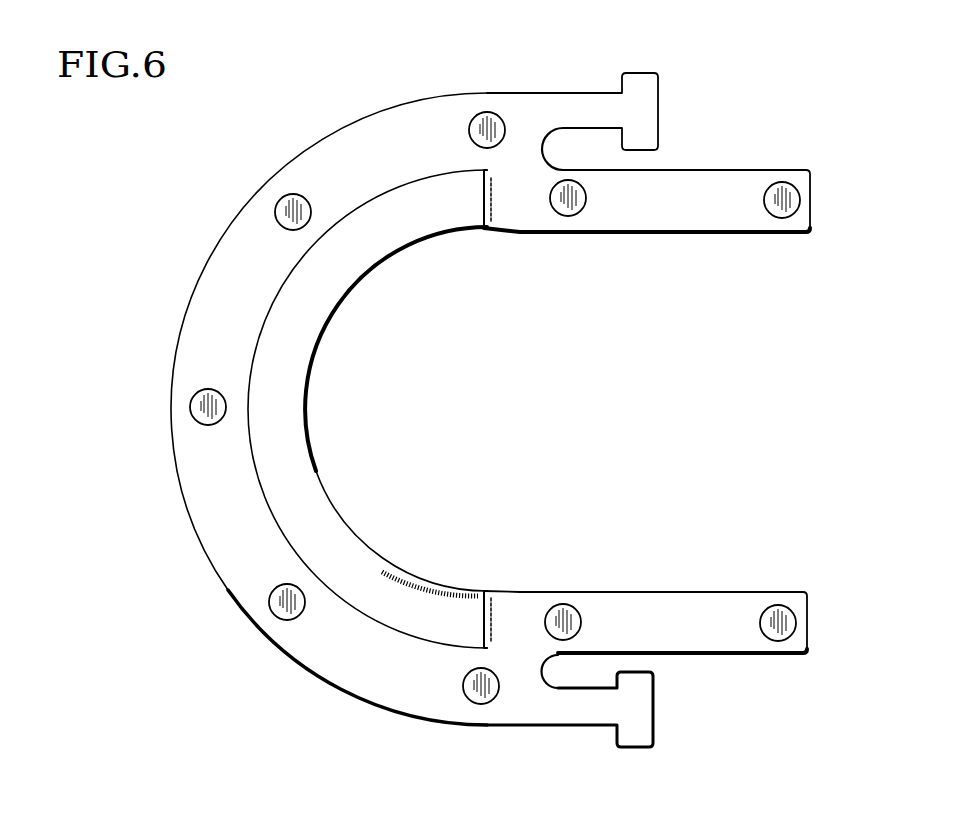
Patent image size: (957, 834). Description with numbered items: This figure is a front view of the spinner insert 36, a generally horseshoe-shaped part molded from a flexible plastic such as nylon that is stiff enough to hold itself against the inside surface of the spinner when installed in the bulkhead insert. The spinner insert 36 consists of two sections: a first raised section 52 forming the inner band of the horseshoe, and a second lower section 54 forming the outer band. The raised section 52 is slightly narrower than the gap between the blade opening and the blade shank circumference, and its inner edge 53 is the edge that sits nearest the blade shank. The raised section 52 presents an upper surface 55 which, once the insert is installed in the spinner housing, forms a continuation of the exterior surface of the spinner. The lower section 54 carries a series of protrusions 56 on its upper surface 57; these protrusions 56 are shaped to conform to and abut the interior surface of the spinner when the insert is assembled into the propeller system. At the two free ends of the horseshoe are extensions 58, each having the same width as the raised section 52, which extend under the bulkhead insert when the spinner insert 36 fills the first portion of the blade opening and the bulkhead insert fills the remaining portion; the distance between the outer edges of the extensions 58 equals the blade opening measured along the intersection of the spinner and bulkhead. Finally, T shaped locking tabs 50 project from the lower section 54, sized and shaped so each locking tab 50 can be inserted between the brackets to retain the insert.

The spinner insert 36 is at (318, 102).
The T shaped locking tab 50 is at (587, 110).
The first raised section 52 is at (343, 537).
The inner edge 53 is at (352, 282).
The second lower section 54 is at (203, 550).
The upper surface 55 is at (283, 412).
The protrusion 56 is at (472, 113).
The upper surface 57 is at (220, 283).
The extension 58 is at (688, 185).